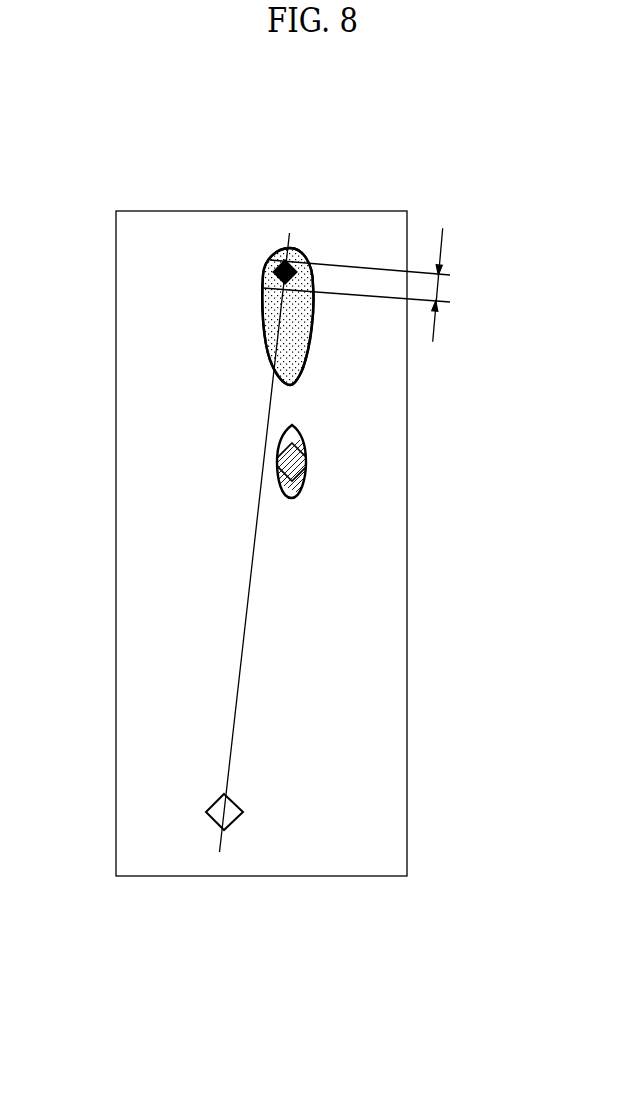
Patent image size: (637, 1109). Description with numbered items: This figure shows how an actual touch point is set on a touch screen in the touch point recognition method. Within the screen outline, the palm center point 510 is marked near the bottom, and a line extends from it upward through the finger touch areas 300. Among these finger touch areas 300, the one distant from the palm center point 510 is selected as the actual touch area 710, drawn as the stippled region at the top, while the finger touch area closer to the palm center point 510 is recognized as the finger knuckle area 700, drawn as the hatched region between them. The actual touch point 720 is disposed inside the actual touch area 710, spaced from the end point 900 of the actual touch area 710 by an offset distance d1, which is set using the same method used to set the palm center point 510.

The end point 900 is at (289, 247).
The actual touch area 710 is at (262, 300).
The finger touch area 300 is at (297, 350).
The actual touch point 720 is at (265, 260).
The offset distance d1 is at (444, 277).
The finger knuckle area 700 is at (292, 487).
The palm center point 510 is at (230, 818).